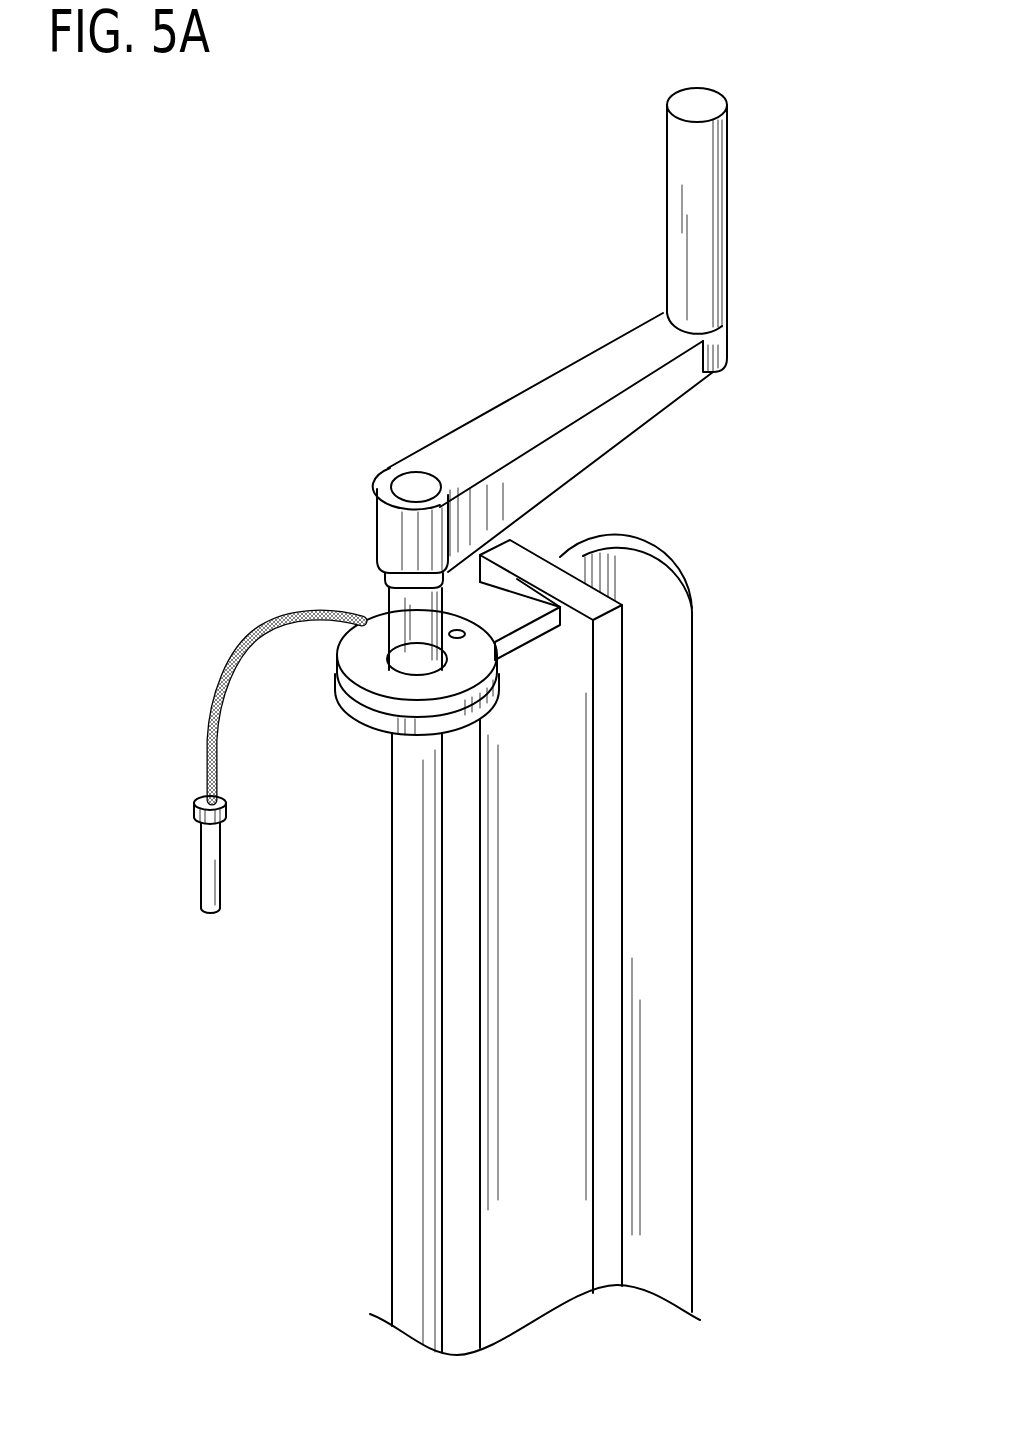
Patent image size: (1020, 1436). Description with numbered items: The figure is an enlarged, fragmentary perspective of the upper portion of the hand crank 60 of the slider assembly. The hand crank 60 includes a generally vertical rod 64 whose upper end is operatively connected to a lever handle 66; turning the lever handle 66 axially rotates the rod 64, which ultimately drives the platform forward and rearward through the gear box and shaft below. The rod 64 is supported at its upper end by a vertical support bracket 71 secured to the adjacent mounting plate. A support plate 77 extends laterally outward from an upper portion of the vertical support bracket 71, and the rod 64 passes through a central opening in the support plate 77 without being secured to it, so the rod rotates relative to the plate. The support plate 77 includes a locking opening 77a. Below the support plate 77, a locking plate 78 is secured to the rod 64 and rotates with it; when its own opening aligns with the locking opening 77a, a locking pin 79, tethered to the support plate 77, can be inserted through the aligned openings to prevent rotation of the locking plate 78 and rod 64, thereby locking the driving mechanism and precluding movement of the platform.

The hand crank 60 is at (142, 332).
The lever handle 66 is at (515, 421).
The support plate 77 is at (372, 632).
The locking opening 77a is at (465, 630).
The locking plate 78 is at (377, 727).
The locking pin 79 is at (205, 857).
The vertical support bracket 71 is at (612, 928).
The vertical rod 64 is at (410, 1000).